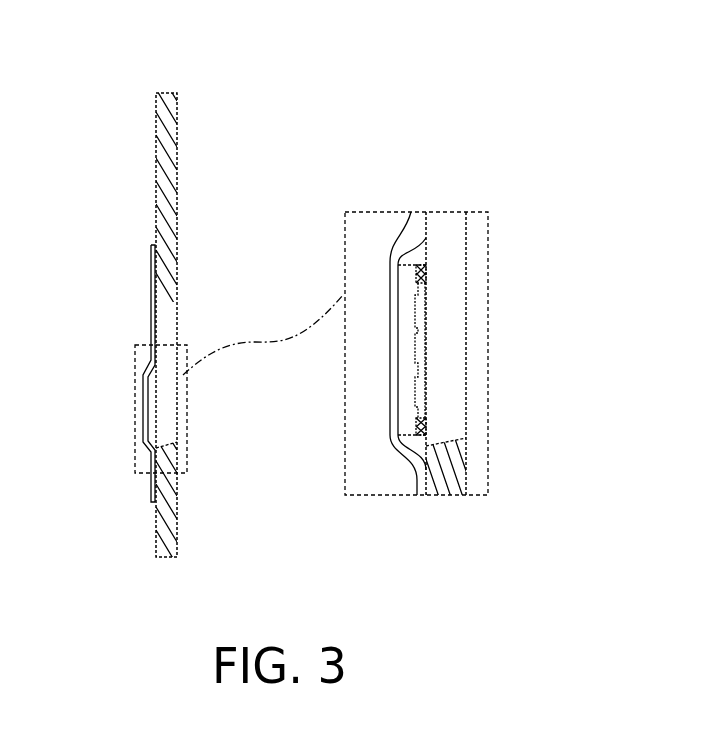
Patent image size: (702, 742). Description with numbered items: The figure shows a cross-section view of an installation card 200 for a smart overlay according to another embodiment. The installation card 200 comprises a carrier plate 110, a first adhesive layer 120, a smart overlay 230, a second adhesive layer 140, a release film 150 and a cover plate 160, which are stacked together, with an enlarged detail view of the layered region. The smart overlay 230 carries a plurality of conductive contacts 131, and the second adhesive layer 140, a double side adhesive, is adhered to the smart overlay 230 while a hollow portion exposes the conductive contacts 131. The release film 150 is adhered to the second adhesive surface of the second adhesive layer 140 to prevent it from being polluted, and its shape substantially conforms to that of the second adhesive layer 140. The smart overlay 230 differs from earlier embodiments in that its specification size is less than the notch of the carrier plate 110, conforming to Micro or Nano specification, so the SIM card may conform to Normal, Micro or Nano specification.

The installation card 200 is at (151, 77).
The carrier plate 110 is at (168, 200).
The first adhesive layer 120 is at (152, 313).
The conductive contacts 131 is at (420, 311).
The second adhesive layer 140 is at (398, 270).
The release film 150 is at (425, 275).
The cover plate 160 is at (170, 300).
The smart overlay 230 is at (149, 409).